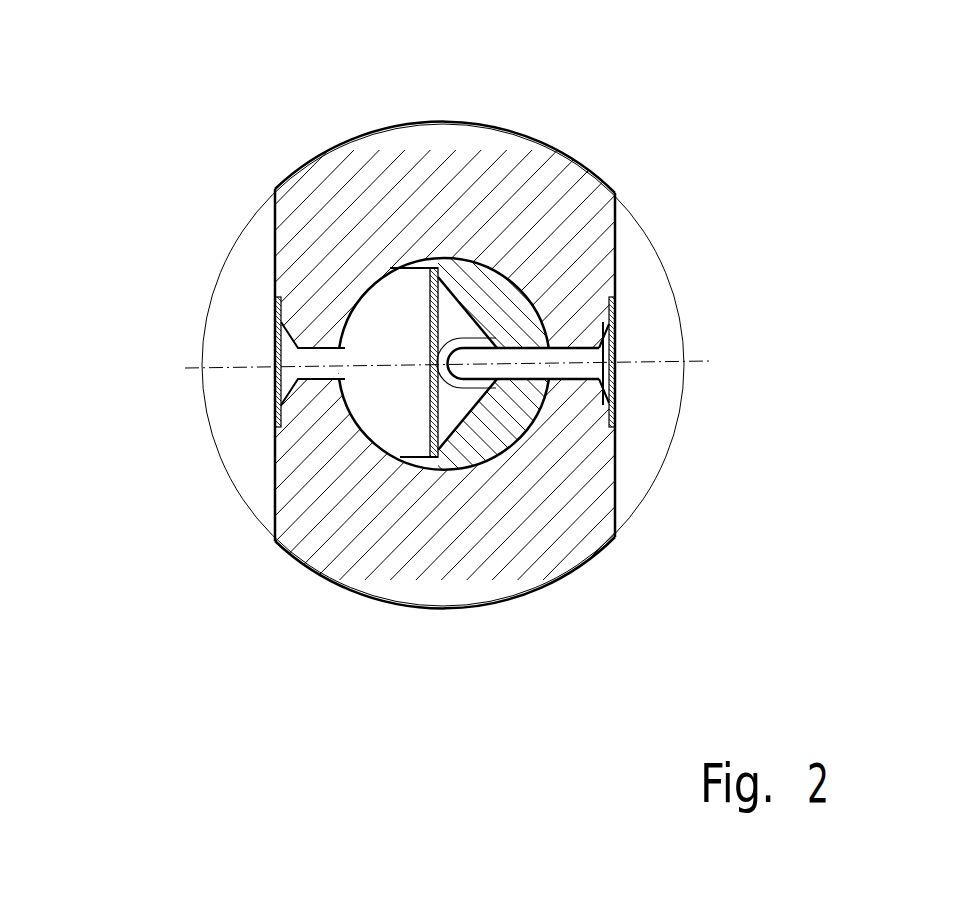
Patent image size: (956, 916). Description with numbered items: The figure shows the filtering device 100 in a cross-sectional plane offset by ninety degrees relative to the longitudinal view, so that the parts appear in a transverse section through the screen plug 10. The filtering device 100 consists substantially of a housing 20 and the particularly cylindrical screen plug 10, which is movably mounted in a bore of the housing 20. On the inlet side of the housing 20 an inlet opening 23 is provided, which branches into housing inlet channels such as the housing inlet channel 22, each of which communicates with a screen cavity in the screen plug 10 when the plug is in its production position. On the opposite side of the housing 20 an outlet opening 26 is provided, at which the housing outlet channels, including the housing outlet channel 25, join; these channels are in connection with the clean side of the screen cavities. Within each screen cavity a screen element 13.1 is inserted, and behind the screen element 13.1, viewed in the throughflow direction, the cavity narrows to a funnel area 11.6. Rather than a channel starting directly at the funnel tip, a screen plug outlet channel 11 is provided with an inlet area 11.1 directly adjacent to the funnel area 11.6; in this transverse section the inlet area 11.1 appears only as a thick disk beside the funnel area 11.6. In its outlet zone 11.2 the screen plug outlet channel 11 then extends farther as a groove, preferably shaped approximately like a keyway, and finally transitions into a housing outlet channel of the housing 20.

The filtering device 100 is at (150, 116).
The housing 20 is at (308, 213).
The housing inlet channel 22 is at (267, 515).
The outlet opening 26 is at (637, 360).
The screen plug 10 is at (488, 290).
The funnel area 11.6 is at (460, 407).
The screen element 13.1 is at (382, 373).
The screen plug outlet channel 11 is at (313, 373).
The inlet opening 23 is at (287, 362).
The inlet area 11.1 is at (518, 355).
The outlet zone 11.2 is at (551, 364).
The housing outlet channel 25 is at (574, 357).